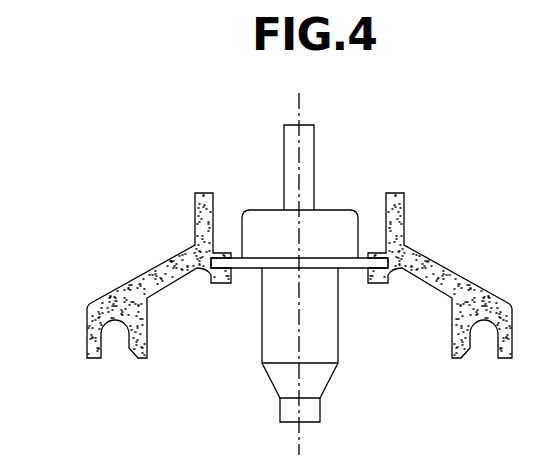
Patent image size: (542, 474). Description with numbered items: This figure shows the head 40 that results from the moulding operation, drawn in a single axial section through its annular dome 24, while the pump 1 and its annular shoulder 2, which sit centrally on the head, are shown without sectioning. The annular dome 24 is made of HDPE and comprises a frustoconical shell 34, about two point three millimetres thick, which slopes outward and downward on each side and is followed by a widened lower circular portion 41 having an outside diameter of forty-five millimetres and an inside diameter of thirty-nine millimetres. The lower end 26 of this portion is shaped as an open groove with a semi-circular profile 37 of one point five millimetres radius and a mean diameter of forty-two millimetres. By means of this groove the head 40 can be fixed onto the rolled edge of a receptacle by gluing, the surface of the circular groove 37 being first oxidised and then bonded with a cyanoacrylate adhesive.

The pump 1 is at (330, 226).
The annular shoulder 2 is at (280, 272).
The head 40 is at (267, 300).
The annular dome 24 is at (267, 300).
The frustoconical shell 34 is at (267, 300).
The lower circular portion 41 is at (267, 300).
The lower end 26 is at (286, 300).
The semi-circular profile 37 is at (117, 333).